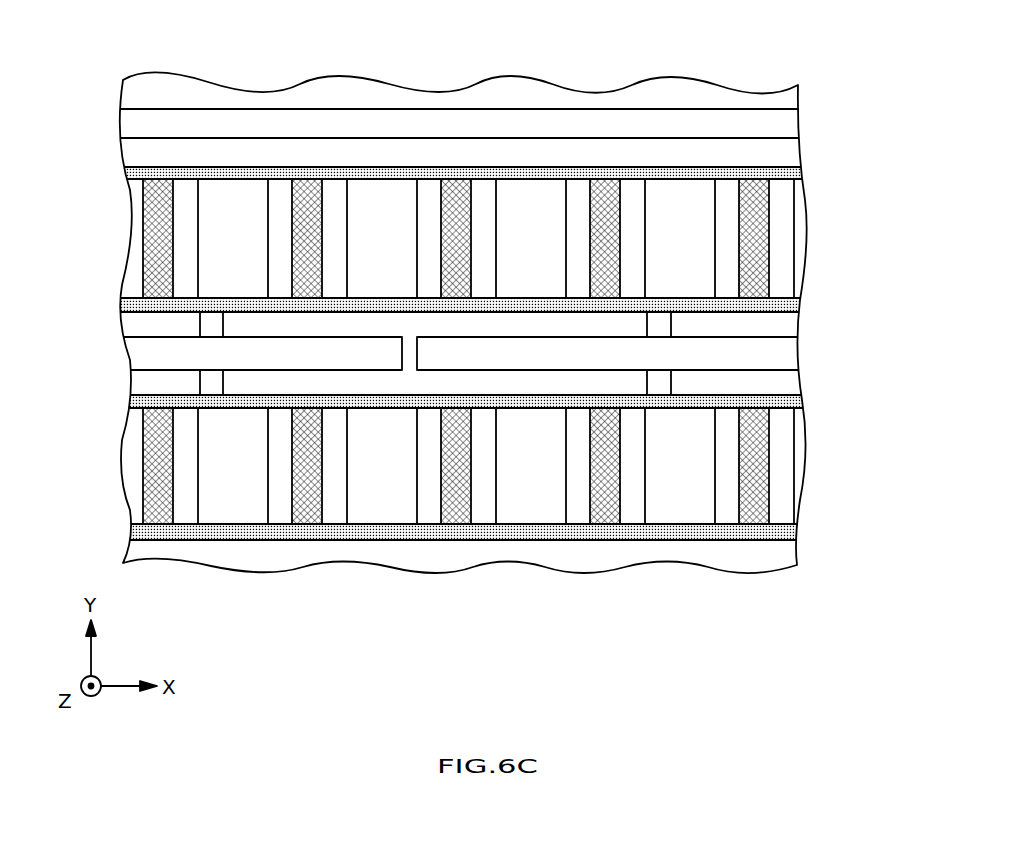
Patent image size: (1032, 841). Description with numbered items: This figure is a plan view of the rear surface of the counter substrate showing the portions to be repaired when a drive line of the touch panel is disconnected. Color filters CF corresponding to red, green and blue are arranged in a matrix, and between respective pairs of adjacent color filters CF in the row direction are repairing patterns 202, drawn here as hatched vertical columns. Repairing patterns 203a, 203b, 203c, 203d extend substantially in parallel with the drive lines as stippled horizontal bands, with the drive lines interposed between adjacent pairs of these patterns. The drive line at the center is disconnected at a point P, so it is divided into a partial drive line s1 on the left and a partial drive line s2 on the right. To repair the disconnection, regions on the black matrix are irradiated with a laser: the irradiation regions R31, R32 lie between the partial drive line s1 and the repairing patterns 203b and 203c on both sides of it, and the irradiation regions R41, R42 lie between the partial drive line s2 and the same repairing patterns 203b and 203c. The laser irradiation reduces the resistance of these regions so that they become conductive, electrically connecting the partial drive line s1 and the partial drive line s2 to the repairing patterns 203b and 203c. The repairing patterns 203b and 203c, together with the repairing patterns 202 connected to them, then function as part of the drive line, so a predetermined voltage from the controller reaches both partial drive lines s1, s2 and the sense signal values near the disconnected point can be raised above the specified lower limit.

The repairing pattern 202 is at (606, 195).
The color filter CF is at (680, 195).
The repairing pattern 203a is at (785, 173).
The repairing pattern 203b is at (785, 305).
The repairing pattern 203c is at (785, 401).
The repairing pattern 203d is at (785, 530).
The partial drive line s1 is at (252, 352).
The partial drive line s2 is at (578, 352).
The disconnected point P is at (414, 392).
The irradiation region R31 is at (212, 330).
The irradiation region R32 is at (212, 387).
The irradiation region R41 is at (659, 323).
The irradiation region R42 is at (659, 379).